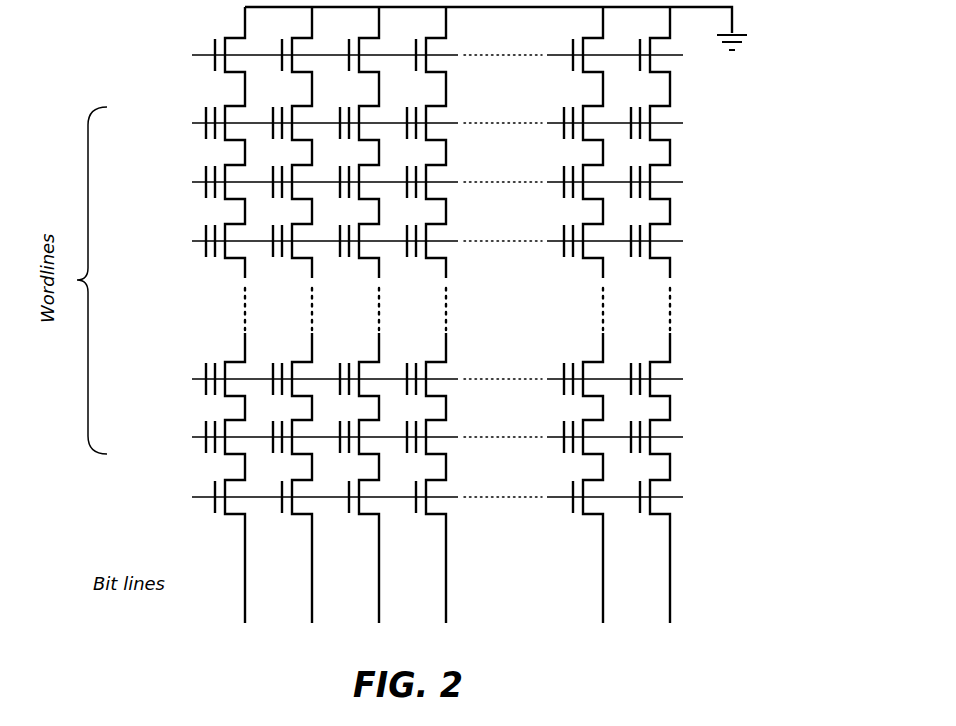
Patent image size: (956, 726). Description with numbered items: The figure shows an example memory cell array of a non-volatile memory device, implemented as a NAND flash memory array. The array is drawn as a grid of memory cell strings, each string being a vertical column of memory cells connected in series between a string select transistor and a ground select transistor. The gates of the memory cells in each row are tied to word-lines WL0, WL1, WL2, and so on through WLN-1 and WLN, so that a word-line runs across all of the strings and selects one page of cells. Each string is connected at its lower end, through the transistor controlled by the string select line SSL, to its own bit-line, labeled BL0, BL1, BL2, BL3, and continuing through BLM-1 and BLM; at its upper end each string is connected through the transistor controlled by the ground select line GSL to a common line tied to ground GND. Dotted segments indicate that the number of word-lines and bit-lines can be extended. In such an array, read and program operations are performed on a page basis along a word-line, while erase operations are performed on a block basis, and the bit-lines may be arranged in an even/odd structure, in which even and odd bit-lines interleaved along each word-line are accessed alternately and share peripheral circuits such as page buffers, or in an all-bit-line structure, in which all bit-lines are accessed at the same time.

The ground connection GND is at (525, 31).
The ground select line GSL is at (369, 57).
The string select line SSL is at (375, 501).
The word-line WL0 is at (408, 124).
The word-line WL1 is at (408, 182).
The word-line WL2 is at (408, 241).
The word-line WLN-1 is at (398, 379).
The word-line WLN is at (407, 437).
The bit-line BL0 is at (231, 315).
The bit-line BL1 is at (298, 315).
The bit-line BL2 is at (365, 315).
The bit-line BL3 is at (432, 315).
The bit-line BLM-1 is at (589, 315).
The bit-line BLM is at (656, 315).